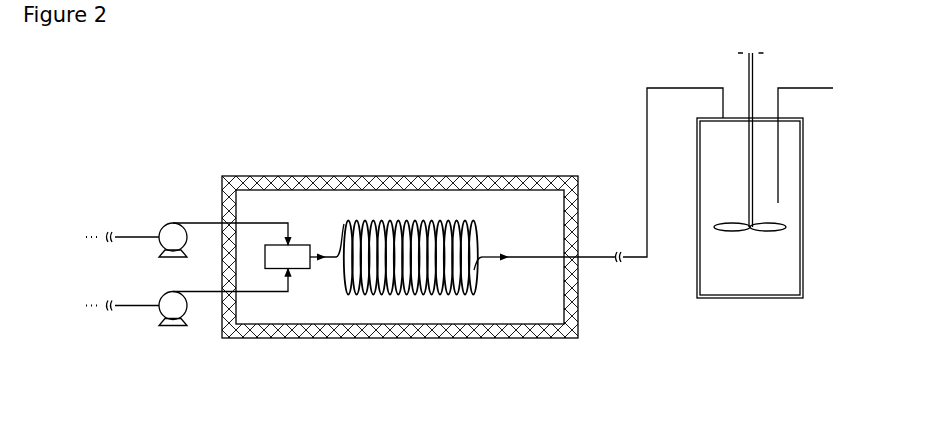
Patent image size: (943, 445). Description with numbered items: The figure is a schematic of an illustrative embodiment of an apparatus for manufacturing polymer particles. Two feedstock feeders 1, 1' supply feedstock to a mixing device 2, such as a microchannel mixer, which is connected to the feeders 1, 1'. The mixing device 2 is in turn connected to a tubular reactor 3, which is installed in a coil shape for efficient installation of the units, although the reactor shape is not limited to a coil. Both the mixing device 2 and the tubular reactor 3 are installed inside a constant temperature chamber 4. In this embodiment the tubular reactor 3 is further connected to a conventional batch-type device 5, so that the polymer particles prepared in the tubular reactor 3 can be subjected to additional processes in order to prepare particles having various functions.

The feedstock feeder 1 is at (136, 195).
The feedstock feeder 1' is at (136, 335).
The mixing device 2 is at (303, 245).
The tubular reactor 3 is at (434, 219).
The constant temperature chamber 4 is at (530, 223).
The batch-type device 5 is at (787, 309).